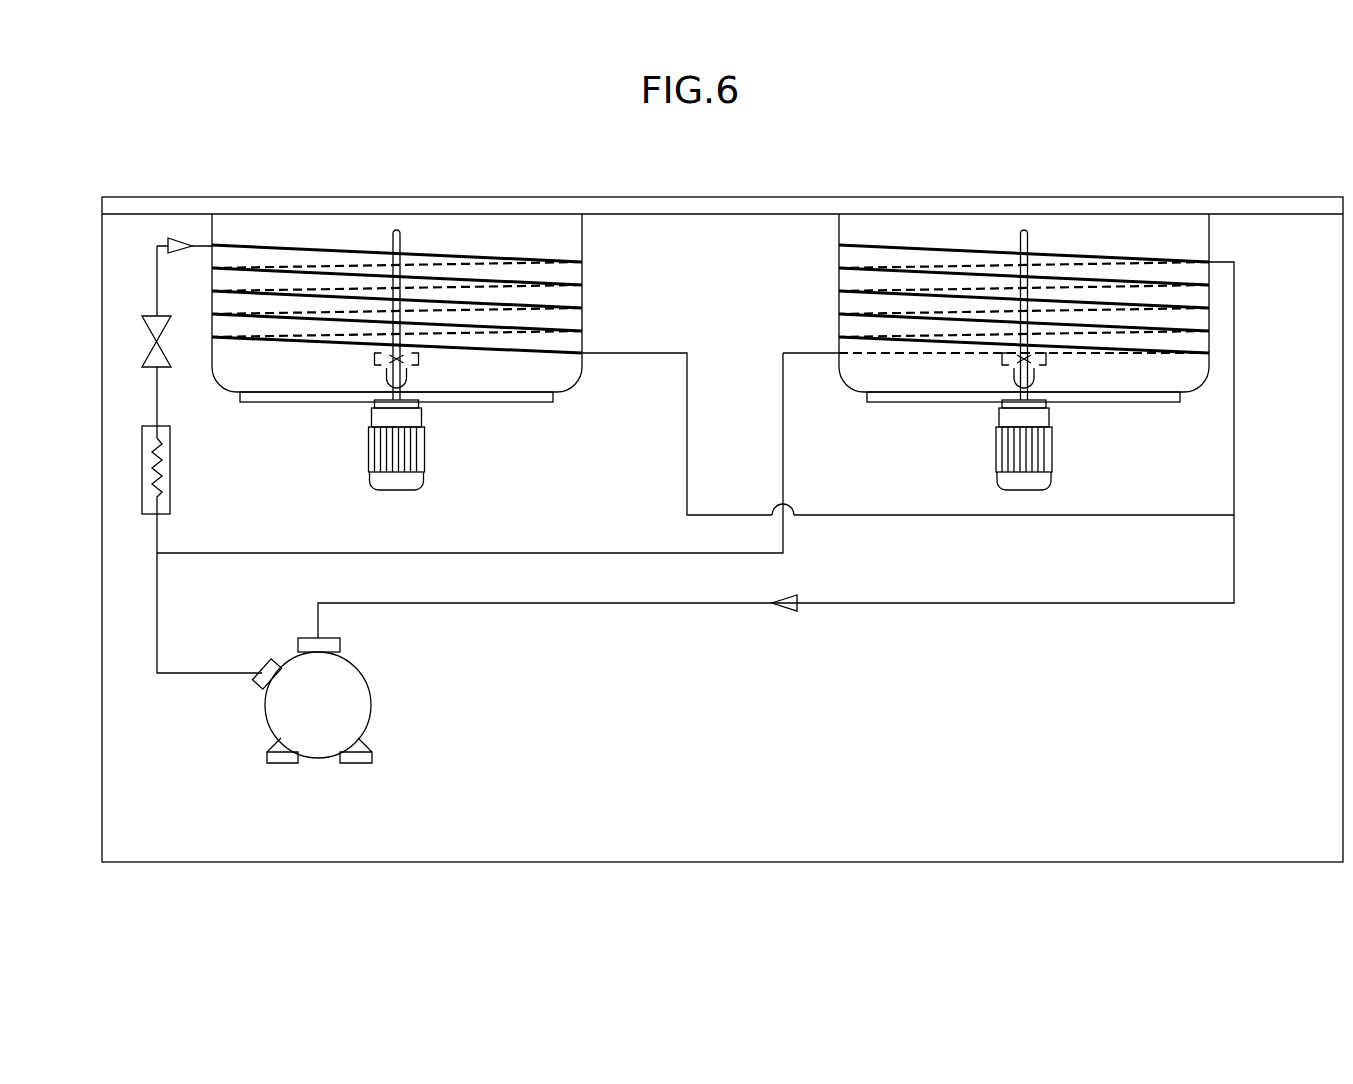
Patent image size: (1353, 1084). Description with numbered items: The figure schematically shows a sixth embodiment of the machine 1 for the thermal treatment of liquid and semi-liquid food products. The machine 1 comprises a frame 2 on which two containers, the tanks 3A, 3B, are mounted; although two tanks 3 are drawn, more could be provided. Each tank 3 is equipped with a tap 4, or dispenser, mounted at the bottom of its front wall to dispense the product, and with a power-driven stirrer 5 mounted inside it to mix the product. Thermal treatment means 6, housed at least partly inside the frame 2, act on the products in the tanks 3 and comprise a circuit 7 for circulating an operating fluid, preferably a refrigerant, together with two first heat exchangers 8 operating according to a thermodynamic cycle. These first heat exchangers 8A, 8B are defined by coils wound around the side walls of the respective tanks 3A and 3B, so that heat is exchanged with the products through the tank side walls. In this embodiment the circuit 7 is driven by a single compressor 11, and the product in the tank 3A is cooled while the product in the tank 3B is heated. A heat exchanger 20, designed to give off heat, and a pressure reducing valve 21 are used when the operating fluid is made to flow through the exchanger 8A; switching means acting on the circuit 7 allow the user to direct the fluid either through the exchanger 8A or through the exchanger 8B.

The machine 1 is at (1213, 152).
The frame 2 is at (1124, 802).
The tank 3 is at (710, 268).
The first tank 3A is at (516, 242).
The second tank 3B is at (1138, 243).
The tap 4 is at (418, 380).
The power-driven stirrer 5 is at (378, 350).
The thermal treatment means 6 is at (546, 700).
The circuit 7 is at (715, 609).
The first heat exchanger 8 is at (710, 231).
The first heat exchanger coil 8A is at (248, 245).
The second heat exchanger coil 8B is at (873, 245).
The compressor 11 is at (322, 732).
The heat exchanger 20 is at (142, 480).
The pressure reducing valve 21 is at (143, 338).